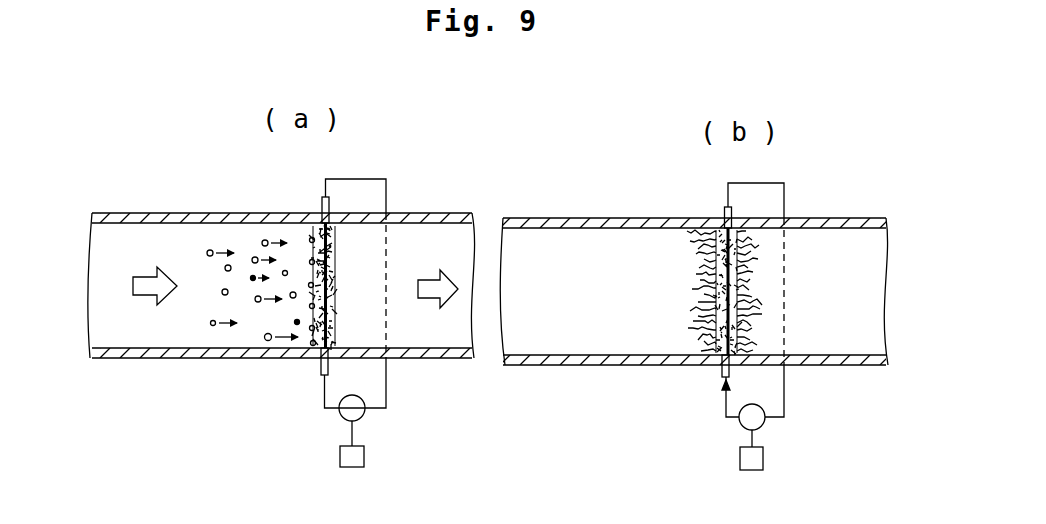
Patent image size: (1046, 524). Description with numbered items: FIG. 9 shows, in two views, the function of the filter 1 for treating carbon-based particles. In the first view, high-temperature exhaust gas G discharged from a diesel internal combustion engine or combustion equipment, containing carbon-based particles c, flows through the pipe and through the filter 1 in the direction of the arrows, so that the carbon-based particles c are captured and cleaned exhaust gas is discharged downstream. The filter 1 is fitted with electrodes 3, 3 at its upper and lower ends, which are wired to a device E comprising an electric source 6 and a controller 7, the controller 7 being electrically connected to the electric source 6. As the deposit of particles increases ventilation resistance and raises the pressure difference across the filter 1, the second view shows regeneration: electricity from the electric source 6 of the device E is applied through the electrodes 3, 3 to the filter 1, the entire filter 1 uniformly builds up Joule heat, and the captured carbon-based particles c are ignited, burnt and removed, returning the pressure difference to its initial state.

The filter 1 is at (291, 358).
The electrodes 3 is at (322, 211).
The electric source 6 is at (360, 413).
The controller 7 is at (352, 467).
The device E is at (334, 418).
The exhaust gas G is at (142, 280).
The carbon-based particles c is at (253, 275).